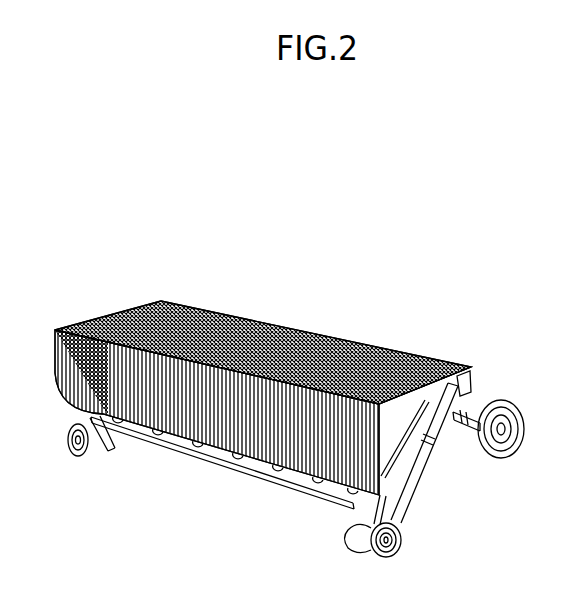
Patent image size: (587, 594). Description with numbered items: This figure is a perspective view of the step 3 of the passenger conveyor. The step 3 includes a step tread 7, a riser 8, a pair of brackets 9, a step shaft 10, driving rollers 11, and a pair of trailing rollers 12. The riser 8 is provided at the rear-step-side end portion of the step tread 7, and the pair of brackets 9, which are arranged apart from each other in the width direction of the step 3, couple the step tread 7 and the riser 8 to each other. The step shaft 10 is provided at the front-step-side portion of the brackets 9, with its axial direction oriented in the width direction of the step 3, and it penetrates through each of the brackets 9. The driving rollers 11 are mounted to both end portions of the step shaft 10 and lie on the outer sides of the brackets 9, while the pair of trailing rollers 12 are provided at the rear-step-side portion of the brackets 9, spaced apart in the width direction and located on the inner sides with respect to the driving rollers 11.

The step 3 is at (263, 362).
The step tread 7 is at (383, 343).
The riser 8 is at (280, 468).
The brackets 9 is at (428, 445).
The step shaft 10 is at (462, 390).
The driving rollers 11 is at (512, 391).
The trailing rollers 12 is at (63, 443).